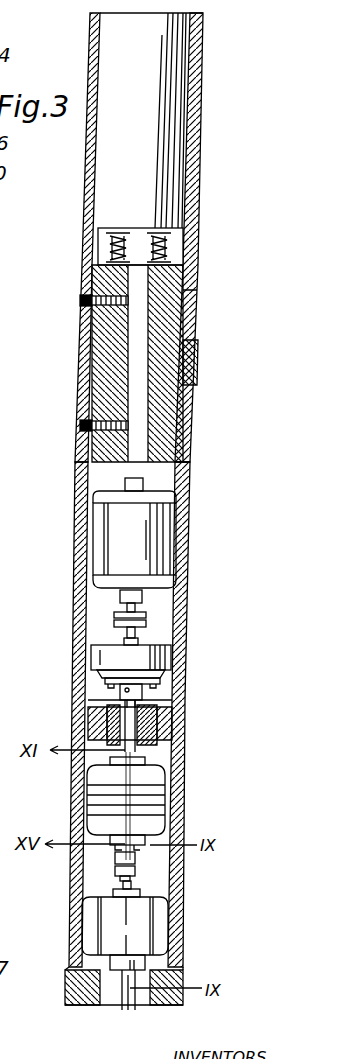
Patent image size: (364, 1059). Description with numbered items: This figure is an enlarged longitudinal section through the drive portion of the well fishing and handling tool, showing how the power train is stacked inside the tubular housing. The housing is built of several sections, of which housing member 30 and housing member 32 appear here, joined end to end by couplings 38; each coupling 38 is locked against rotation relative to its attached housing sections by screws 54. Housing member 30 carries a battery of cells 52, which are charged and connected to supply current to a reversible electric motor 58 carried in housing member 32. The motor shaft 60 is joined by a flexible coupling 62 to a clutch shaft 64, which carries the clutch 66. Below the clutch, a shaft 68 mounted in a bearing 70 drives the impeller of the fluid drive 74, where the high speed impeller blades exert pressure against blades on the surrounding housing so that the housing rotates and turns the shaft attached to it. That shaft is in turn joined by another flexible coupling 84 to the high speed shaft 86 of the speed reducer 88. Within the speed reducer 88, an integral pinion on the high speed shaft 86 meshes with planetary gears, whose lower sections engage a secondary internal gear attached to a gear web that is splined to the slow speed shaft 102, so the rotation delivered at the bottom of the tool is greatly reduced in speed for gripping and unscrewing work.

The housing member 30 is at (90, 171).
The housing member 32 is at (75, 667).
The coupling 38 is at (95, 378).
The battery of cells 52 is at (178, 163).
The screw 54 is at (85, 300).
The reversible electric motor 58 is at (152, 546).
The motor shaft 60 is at (142, 607).
The flexible coupling 62 is at (147, 615).
The clutch shaft 64 is at (140, 630).
The clutch 66 is at (172, 656).
The shaft 68 is at (137, 699).
The bearing 70 is at (173, 723).
The fluid drive 74 is at (96, 800).
The flexible coupling 84 is at (137, 862).
The high speed shaft 86 is at (133, 882).
The speed reducer 88 is at (125, 929).
The slow speed shaft 102 is at (120, 1006).